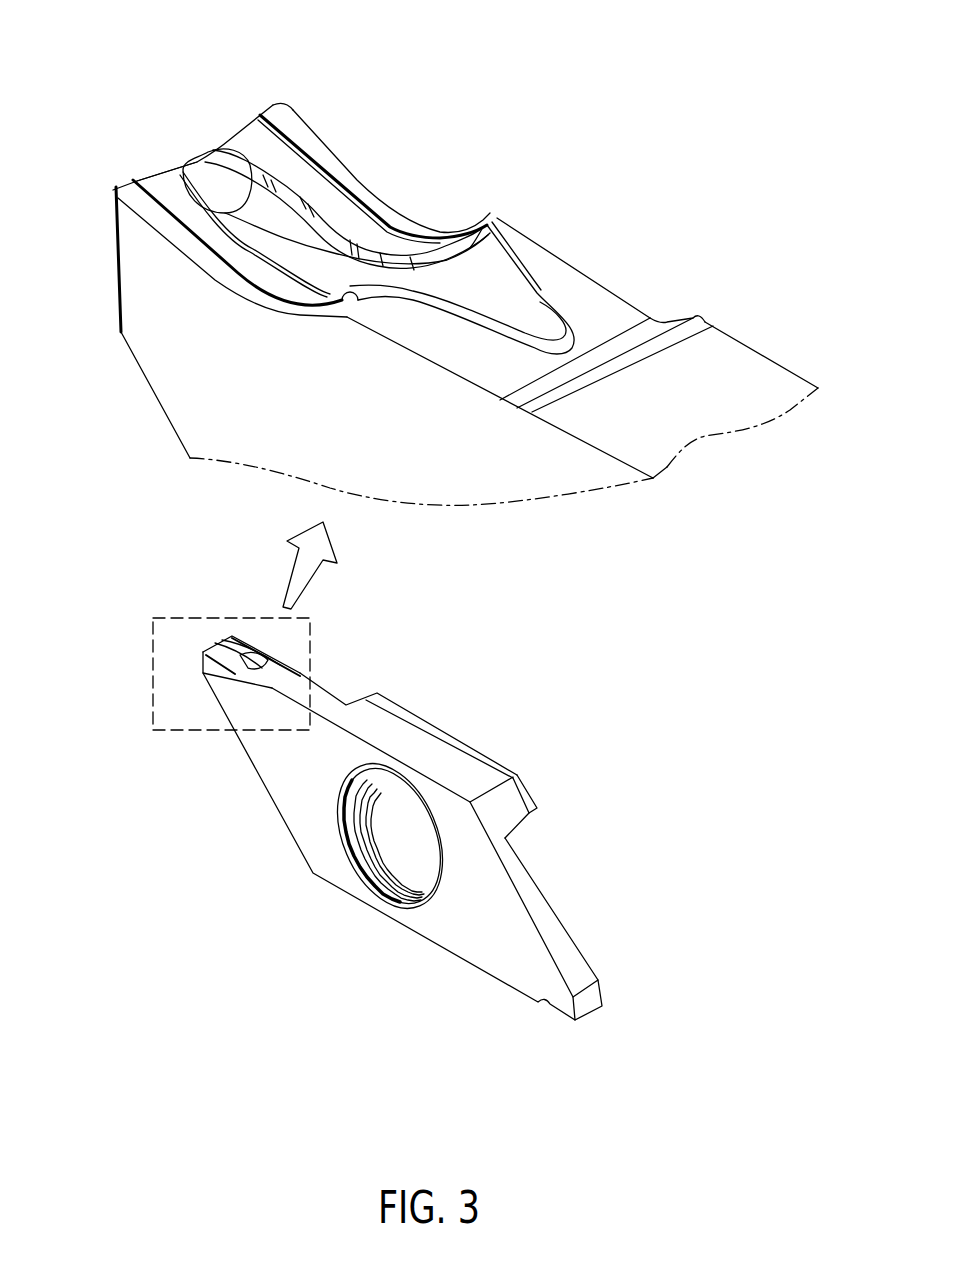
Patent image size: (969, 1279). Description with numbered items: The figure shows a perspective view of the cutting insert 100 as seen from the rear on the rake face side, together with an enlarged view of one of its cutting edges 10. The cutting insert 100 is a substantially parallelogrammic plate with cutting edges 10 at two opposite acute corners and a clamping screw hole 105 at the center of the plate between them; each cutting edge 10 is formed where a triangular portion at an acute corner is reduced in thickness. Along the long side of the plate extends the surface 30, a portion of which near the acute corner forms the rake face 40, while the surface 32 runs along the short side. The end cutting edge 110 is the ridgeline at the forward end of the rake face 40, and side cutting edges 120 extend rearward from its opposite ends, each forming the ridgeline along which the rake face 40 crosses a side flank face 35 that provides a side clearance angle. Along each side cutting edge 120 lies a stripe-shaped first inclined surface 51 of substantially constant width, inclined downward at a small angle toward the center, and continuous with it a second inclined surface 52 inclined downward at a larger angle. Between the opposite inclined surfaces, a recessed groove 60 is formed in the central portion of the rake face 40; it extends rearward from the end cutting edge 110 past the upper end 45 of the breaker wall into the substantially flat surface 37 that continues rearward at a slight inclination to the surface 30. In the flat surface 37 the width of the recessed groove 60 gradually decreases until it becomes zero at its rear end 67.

The cutting edge 10 is at (113, 134).
The surface extending along the long side 30 is at (733, 368).
The surface extending along the short side 32 is at (553, 920).
The side flank face 35 is at (170, 335).
The flat surface 37 is at (547, 268).
The rake face 40 is at (267, 146).
The upper end of the breaker wall 45 is at (487, 228).
The first inclined surface 51 is at (295, 123).
The second inclined surface 52 is at (317, 192).
The recessed groove 60 is at (240, 211).
The rear end of the recessed groove 67 is at (572, 323).
The cutting insert 100 is at (549, 708).
The clamping screw hole 105 is at (400, 882).
The end cutting edge 110 is at (148, 168).
The side cutting edge 120 is at (352, 166).